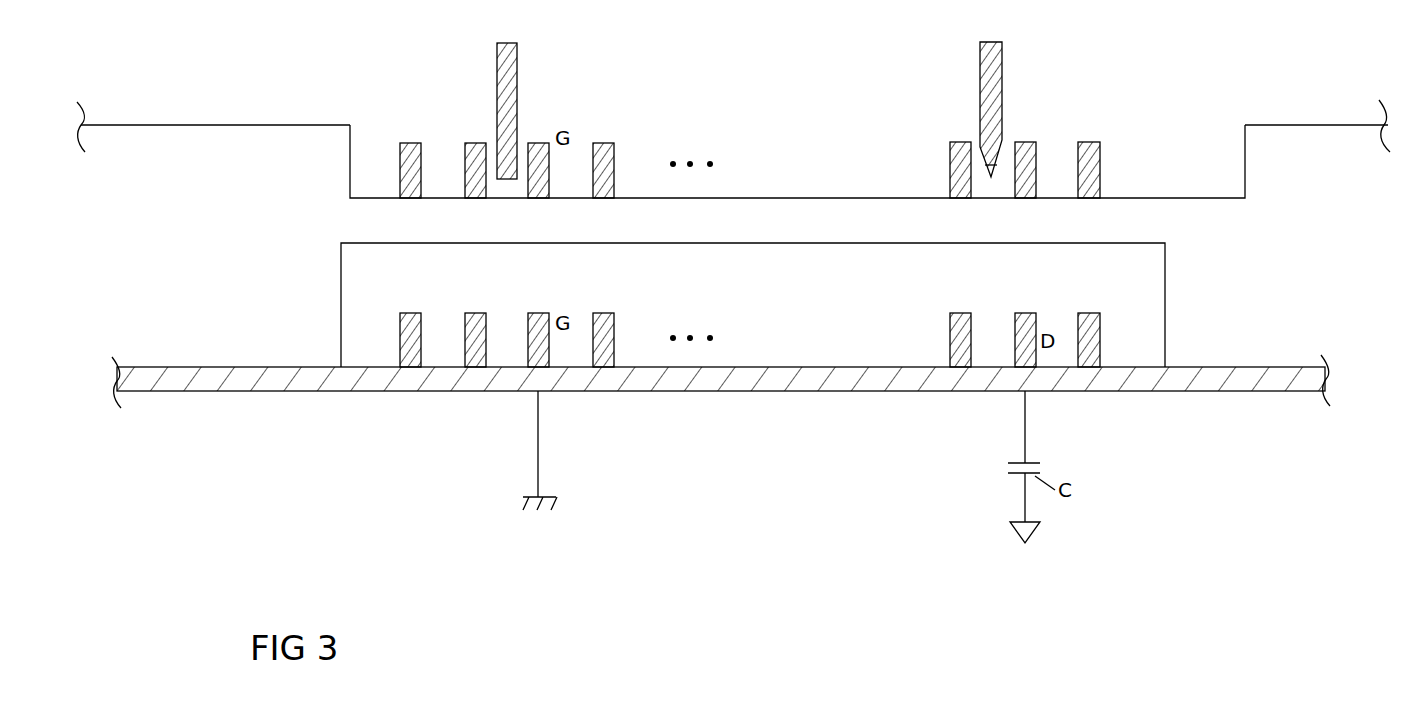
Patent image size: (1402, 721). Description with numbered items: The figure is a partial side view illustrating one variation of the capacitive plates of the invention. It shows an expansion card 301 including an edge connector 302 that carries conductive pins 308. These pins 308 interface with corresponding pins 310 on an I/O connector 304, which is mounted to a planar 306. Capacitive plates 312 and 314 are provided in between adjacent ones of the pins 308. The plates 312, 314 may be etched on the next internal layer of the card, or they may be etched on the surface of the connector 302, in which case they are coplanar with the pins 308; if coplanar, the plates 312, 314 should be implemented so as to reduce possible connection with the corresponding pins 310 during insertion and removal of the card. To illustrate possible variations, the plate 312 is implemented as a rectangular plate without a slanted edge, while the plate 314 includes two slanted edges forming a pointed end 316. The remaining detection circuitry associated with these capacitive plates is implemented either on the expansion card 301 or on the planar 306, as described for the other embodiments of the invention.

The expansion card 301 is at (187, 128).
The edge connector 302 is at (348, 155).
The I/O connector 304 is at (340, 318).
The planar 306 is at (198, 367).
The conductive pins 308 is at (600, 199).
The corresponding pins 310 is at (600, 313).
The capacitive plate 312 is at (518, 50).
The capacitive plate 314 is at (978, 55).
The pointed end 316 is at (997, 163).